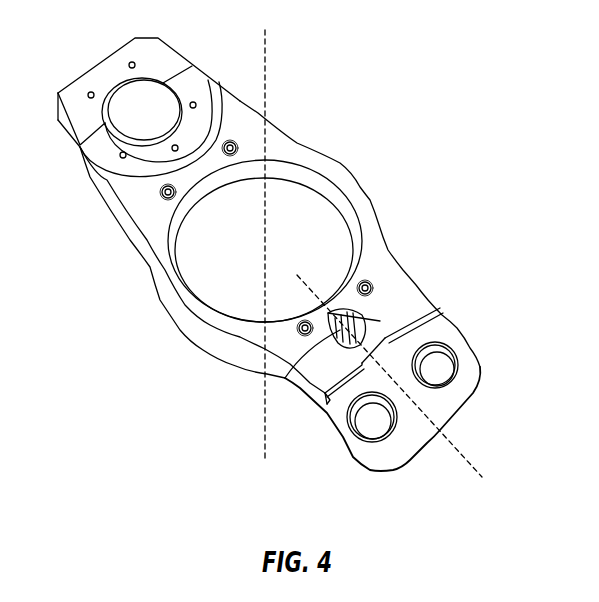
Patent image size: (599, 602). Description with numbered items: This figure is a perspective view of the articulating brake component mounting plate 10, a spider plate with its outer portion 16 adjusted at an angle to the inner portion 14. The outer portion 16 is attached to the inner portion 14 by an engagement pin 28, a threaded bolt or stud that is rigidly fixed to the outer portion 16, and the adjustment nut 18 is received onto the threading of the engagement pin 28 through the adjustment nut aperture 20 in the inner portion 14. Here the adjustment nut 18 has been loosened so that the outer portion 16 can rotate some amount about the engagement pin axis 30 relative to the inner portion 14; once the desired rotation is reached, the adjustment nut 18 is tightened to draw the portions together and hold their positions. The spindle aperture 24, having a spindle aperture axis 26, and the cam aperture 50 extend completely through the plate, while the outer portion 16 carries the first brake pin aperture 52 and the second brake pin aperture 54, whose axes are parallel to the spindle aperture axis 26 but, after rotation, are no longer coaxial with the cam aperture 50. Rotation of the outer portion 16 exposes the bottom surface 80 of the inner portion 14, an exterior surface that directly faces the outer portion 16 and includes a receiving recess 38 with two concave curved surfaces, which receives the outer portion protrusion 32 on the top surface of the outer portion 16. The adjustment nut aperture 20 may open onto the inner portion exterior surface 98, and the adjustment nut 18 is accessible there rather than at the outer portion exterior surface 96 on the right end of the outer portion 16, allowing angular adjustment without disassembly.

The articulating brake component mounting plate 10 is at (440, 80).
The inner portion 14 is at (182, 316).
The outer portion 16 is at (350, 438).
The adjustment nut 18 is at (374, 324).
The adjustment nut aperture 20 is at (296, 368).
The spindle aperture 24 is at (193, 253).
The spindle aperture axis 26 is at (265, 70).
The engagement pin 28 is at (343, 307).
The engagement pin axis 30 is at (472, 465).
The outer portion protrusion 32 is at (423, 331).
The receiving recess 38 is at (418, 322).
The cam aperture 50 is at (127, 108).
The first brake pin aperture 52 is at (372, 423).
The second brake pin aperture 54 is at (433, 373).
The bottom surface 80 is at (339, 414).
The outer portion exterior surface 96 is at (387, 470).
The inner portion exterior surface 98 is at (247, 350).